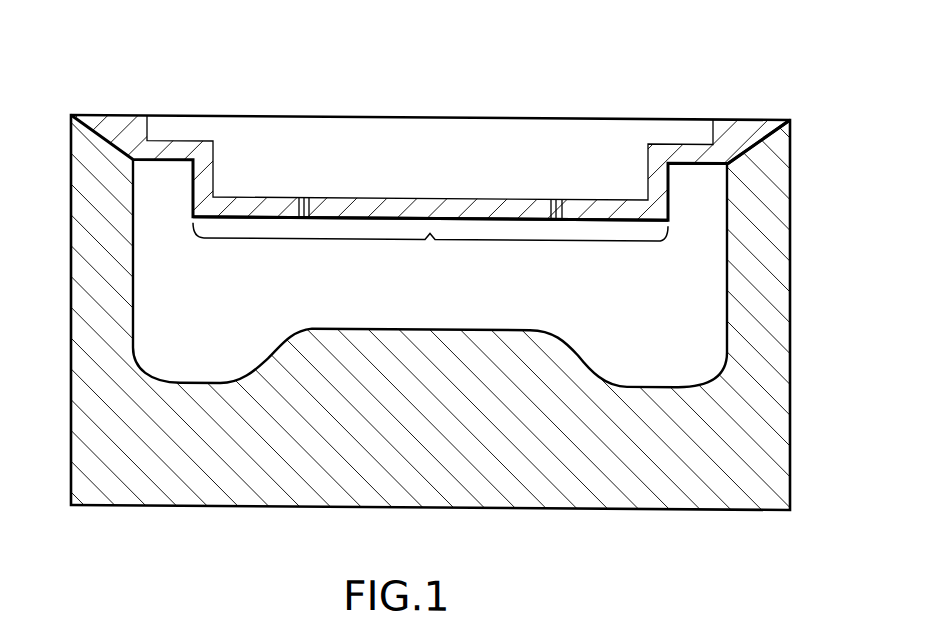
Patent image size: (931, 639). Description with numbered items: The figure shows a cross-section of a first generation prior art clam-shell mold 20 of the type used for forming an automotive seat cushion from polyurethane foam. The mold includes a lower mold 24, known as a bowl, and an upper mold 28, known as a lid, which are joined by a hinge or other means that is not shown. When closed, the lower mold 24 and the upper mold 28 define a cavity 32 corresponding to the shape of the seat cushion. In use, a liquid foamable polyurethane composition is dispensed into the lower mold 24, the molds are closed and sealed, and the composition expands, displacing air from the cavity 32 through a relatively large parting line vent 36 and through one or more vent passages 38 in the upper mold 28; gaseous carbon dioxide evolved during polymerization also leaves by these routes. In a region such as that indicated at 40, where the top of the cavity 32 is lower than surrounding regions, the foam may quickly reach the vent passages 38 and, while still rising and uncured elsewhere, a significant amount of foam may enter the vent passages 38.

The clam-shell mold 20 is at (465, 291).
The lower mold 24 is at (465, 335).
The upper mold 28 is at (451, 166).
The cavity 32 is at (447, 318).
The parting line vent 36 is at (790, 114).
The vent passages 38 is at (307, 194).
The region where top of cavity is lower 40 is at (430, 251).